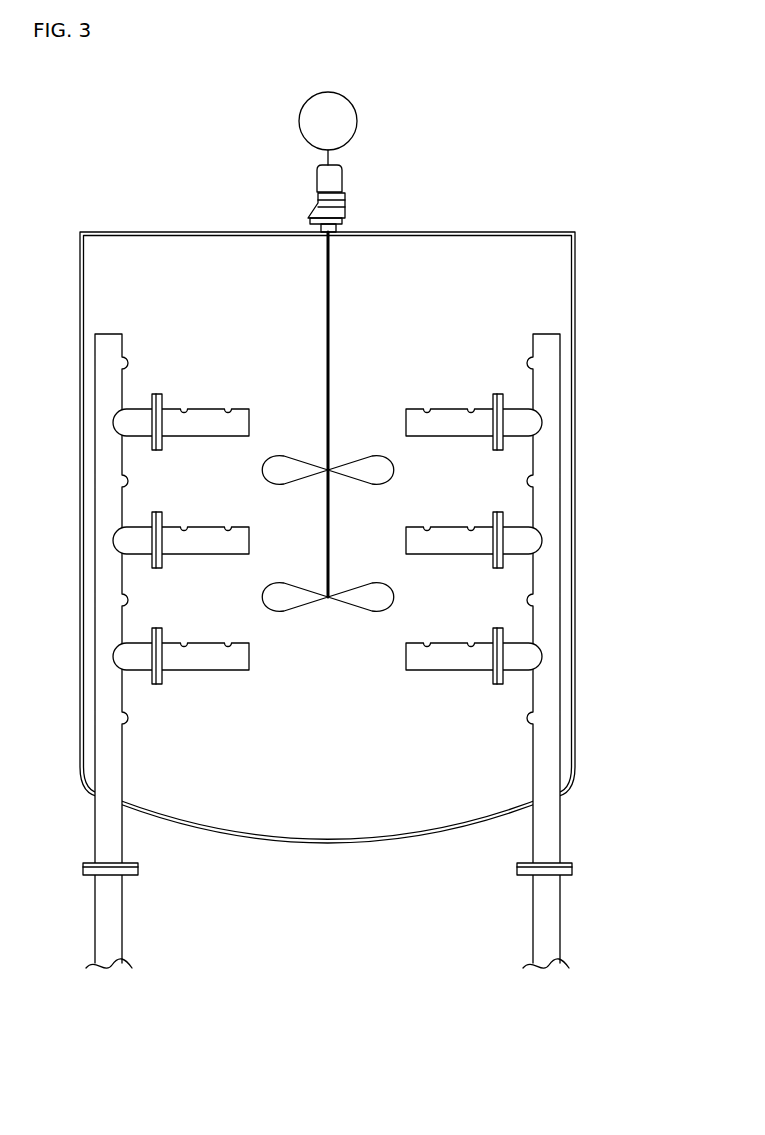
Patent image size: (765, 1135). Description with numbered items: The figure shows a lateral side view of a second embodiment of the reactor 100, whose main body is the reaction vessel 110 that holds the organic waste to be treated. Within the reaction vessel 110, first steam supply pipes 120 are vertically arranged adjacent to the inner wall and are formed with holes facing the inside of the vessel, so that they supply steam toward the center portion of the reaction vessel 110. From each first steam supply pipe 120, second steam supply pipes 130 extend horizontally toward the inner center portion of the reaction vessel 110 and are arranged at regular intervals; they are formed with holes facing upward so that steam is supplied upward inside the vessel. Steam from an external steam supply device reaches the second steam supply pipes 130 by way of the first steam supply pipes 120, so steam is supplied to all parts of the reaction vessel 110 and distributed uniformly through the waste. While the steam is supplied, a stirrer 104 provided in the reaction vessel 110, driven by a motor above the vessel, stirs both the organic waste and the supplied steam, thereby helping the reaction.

The reactor / drive unit 100 is at (493, 222).
The stirrer 104 is at (290, 455).
The reaction vessel 110 is at (575, 373).
The first steam supply pipe 120 is at (548, 831).
The second steam supply pipe 130 is at (423, 670).